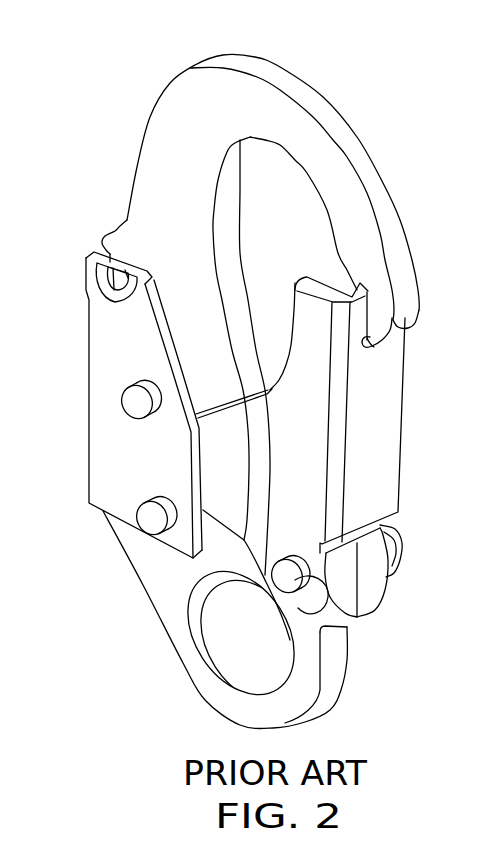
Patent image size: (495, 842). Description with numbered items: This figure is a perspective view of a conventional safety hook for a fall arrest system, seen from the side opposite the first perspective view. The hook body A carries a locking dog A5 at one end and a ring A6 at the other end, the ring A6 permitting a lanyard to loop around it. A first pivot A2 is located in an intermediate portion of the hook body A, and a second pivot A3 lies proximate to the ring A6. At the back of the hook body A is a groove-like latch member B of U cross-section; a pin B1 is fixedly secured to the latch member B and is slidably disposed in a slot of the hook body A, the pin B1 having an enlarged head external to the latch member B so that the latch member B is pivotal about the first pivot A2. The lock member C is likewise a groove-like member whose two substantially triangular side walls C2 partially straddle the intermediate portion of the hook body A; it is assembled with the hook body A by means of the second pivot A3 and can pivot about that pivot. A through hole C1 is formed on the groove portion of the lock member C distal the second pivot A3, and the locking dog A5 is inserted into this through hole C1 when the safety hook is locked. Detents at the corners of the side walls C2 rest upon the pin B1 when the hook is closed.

The hook body A is at (370, 187).
The first pivot A2 is at (133, 402).
The second pivot A3 is at (295, 581).
The locking dog A5 is at (373, 332).
The ring A6 is at (188, 657).
The latch member B is at (82, 337).
The pin B1 is at (150, 519).
The lock member C is at (383, 453).
The through hole C1 is at (368, 347).
The side walls C2 is at (217, 478).